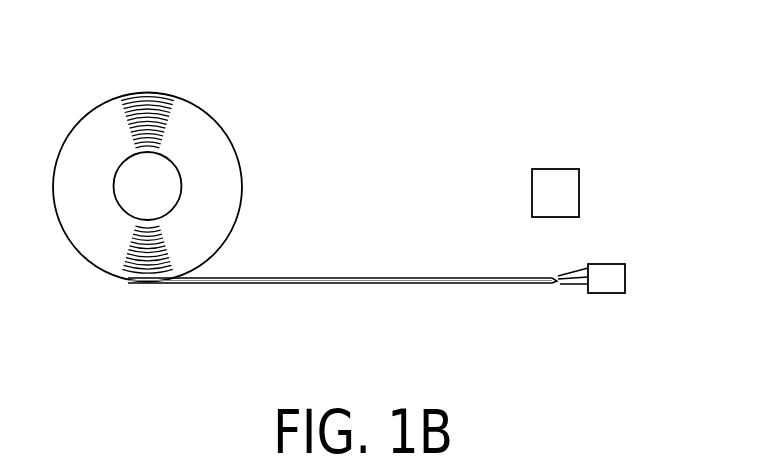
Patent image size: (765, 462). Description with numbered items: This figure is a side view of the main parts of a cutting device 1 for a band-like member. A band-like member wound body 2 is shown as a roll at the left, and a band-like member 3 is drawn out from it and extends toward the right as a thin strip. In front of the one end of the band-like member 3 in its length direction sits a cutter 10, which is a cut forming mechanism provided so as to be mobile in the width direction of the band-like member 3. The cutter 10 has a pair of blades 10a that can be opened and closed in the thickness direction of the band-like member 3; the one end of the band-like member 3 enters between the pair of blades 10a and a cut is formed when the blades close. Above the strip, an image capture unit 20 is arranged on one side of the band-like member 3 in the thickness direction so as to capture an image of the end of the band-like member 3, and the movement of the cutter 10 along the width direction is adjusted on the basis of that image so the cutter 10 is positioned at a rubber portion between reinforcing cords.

The cutting device 1 is at (579, 107).
The band-like member wound body 2 is at (192, 119).
The band-like member 3 is at (327, 277).
The cutter 10 is at (607, 273).
The pair of blades 10a is at (578, 287).
The image capture unit 20 is at (554, 180).